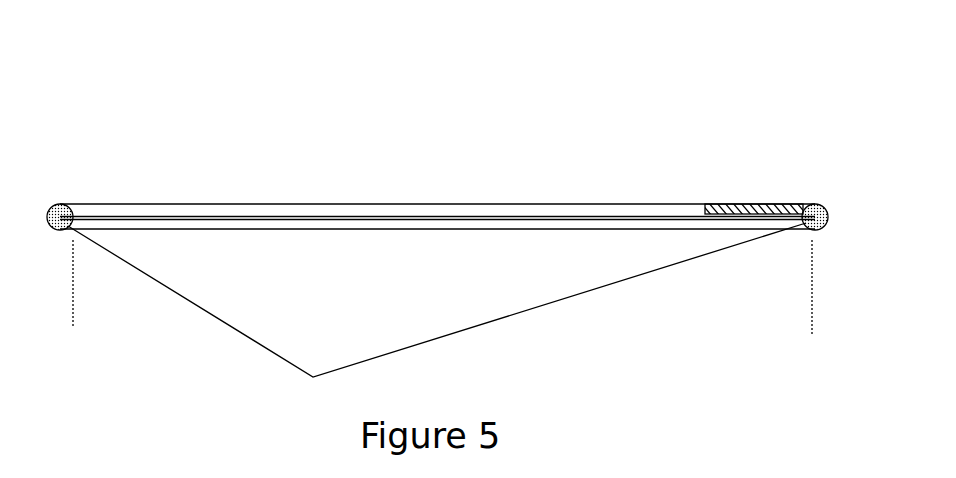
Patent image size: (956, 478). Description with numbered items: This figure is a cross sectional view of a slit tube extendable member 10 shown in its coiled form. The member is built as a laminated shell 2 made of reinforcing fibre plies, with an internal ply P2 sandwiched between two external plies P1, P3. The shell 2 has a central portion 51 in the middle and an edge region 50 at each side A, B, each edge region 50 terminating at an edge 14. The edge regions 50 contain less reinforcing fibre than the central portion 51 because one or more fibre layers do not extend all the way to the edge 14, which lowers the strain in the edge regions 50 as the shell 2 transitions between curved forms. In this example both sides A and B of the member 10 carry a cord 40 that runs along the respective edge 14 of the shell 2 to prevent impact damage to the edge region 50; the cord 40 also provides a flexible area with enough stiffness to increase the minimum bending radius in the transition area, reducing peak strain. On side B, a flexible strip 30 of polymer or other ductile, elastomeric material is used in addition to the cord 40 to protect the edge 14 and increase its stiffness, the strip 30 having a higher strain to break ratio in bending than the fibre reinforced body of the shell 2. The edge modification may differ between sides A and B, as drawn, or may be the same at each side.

The composite member 10 is at (126, 60).
The shell 2 is at (342, 229).
The edge 14 is at (75, 207).
The flexible strip 30 is at (757, 204).
The cord 40 is at (437, 318).
The edge region 50 is at (815, 92).
The central portion 51 is at (662, 60).
The external ply P1 is at (169, 205).
The internal ply P2 is at (235, 217).
The external ply P3 is at (283, 230).
The side A is at (73, 302).
The side B is at (815, 307).